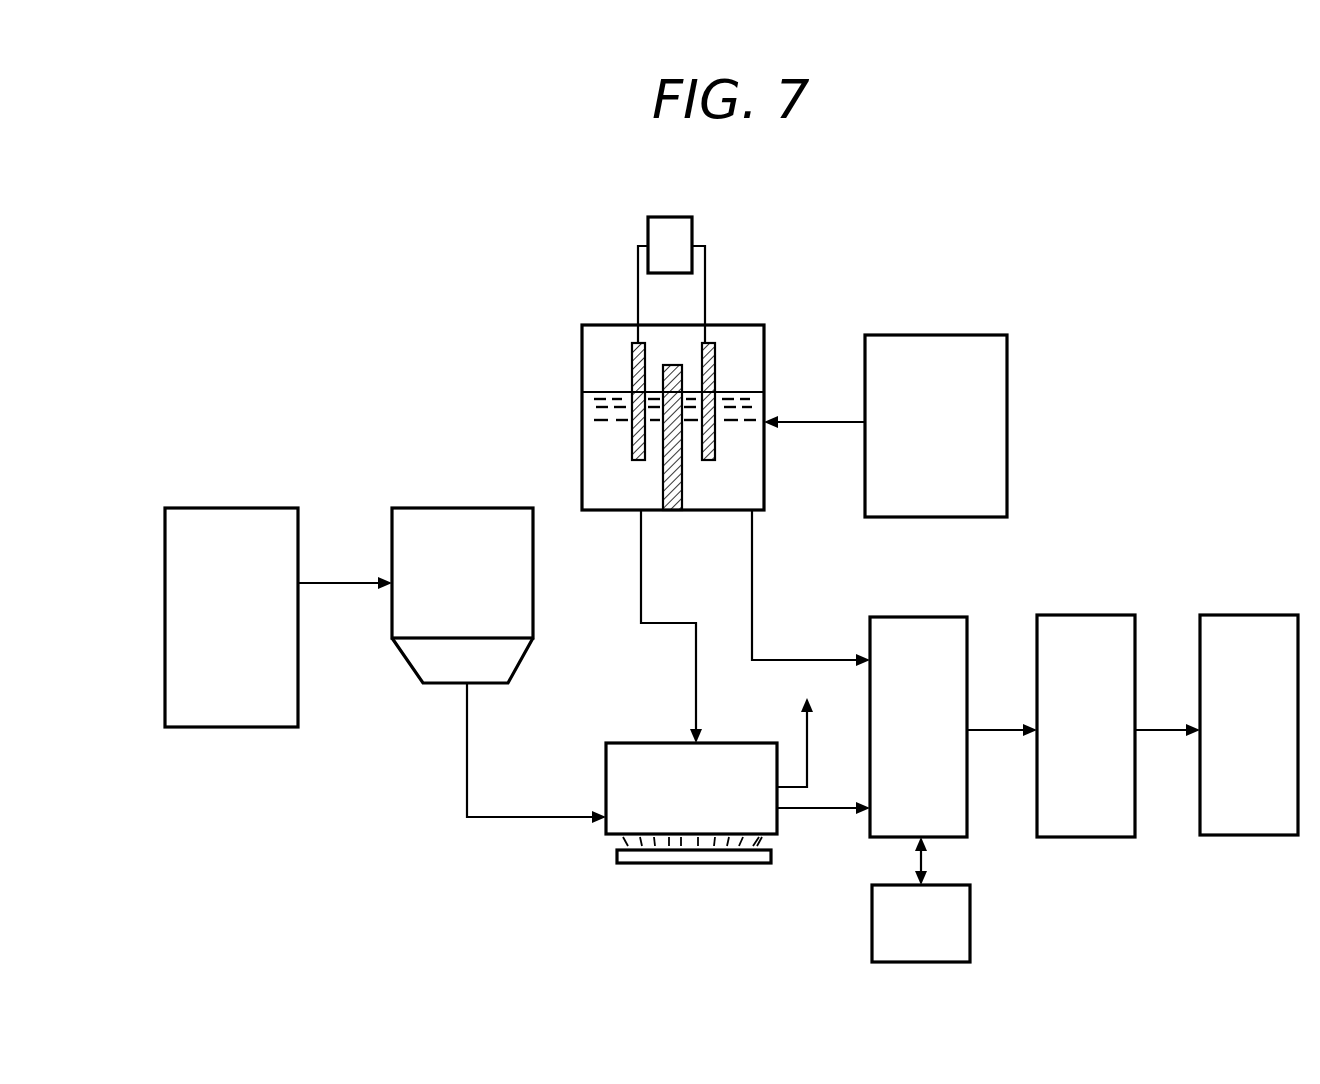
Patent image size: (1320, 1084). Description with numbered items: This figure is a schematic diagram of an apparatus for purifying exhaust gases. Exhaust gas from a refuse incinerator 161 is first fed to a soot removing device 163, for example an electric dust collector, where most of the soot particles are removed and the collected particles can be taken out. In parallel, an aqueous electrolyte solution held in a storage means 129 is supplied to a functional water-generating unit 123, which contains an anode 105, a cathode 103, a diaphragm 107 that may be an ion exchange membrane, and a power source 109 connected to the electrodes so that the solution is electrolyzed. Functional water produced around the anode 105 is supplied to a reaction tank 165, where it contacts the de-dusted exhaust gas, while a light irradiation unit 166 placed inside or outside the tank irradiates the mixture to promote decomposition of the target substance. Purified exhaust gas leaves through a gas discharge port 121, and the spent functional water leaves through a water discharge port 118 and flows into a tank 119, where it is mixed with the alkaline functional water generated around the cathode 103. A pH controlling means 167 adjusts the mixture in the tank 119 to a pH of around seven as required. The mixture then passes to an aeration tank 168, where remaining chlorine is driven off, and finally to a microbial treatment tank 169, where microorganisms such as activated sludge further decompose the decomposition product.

The cathode 103 is at (715, 392).
The anode 105 is at (632, 393).
The diaphragm 107 is at (682, 490).
The power source 109 is at (683, 222).
The water discharge port 118 is at (818, 813).
The tank 119 is at (894, 673).
The gas discharge port 121 is at (807, 752).
The functional water-generating unit 123 is at (582, 487).
The storage means 129 is at (885, 426).
The refuse incinerator 161 is at (278, 617).
The soot removing device 163 is at (422, 520).
The reaction tank 165 is at (691, 678).
The light irradiation unit 166 is at (700, 864).
The pH controlling means 167 is at (921, 899).
The aeration tank 168 is at (1118, 726).
The microbial treatment tank 169 is at (1249, 725).